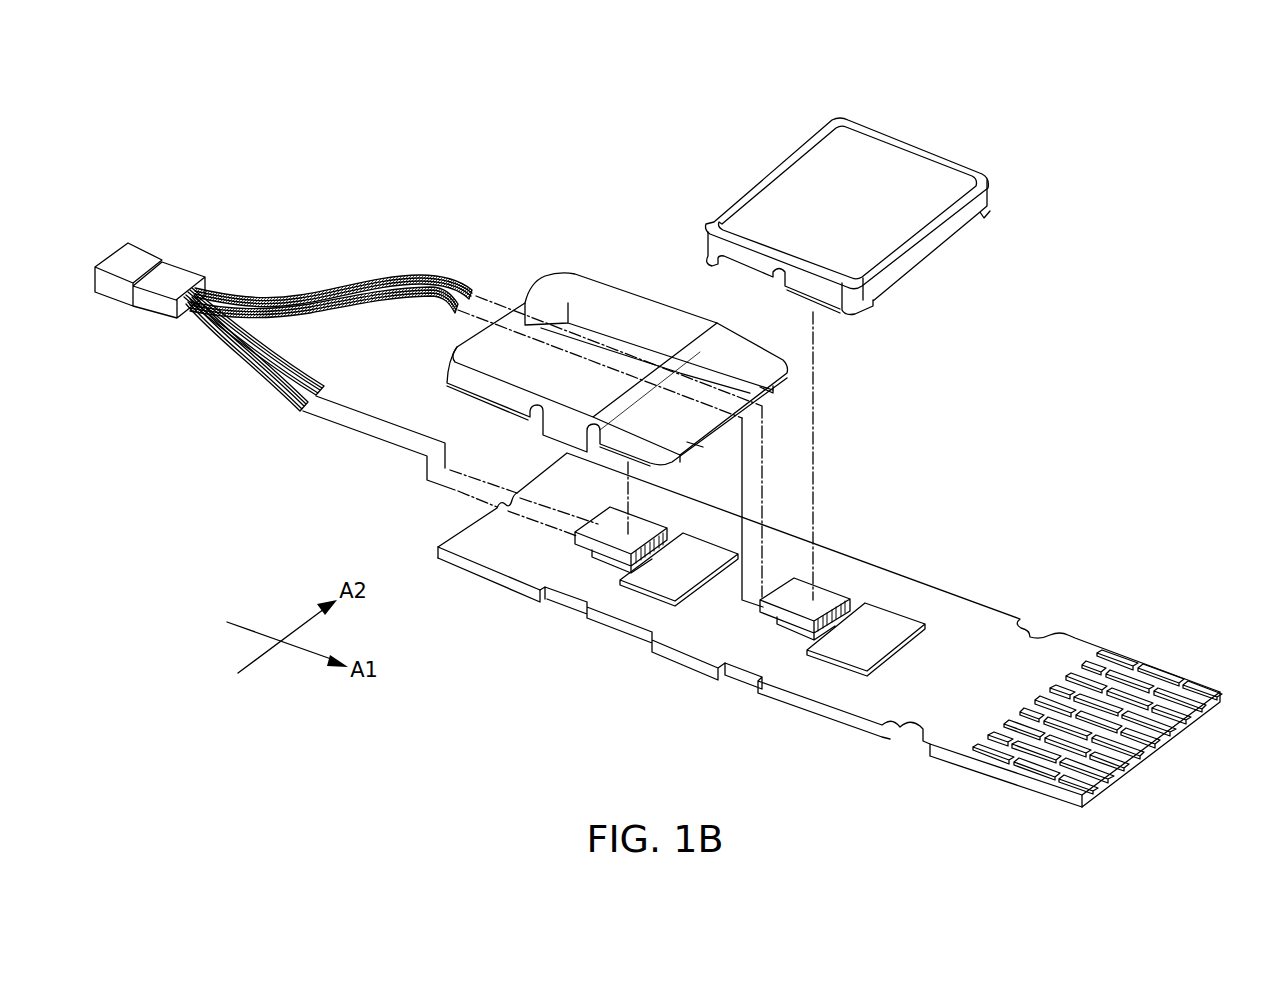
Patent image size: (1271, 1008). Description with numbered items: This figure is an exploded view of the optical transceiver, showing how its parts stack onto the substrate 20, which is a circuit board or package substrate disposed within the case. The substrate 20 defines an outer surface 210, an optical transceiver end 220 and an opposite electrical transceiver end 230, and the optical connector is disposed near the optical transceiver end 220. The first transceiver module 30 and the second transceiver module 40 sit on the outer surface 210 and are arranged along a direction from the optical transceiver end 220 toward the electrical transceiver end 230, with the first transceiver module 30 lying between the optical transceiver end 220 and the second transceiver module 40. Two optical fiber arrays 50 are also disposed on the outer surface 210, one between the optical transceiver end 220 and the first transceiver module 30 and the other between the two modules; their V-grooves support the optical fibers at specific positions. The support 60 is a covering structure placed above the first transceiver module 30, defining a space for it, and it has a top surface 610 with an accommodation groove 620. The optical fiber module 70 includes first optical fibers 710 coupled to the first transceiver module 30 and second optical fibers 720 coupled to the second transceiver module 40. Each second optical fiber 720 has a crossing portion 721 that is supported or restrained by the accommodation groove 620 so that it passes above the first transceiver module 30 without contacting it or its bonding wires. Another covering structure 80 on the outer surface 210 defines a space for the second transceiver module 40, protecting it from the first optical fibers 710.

The substrate 20 is at (762, 551).
The outer surface 210 is at (960, 607).
The optical transceiver end 220 is at (472, 517).
The electrical transceiver end 230 is at (1131, 695).
The first transceiver module 30 is at (697, 563).
The second transceiver module 40 is at (874, 625).
The optical fiber array 50 is at (606, 538).
The support 60 is at (617, 337).
The top surface 610 is at (574, 283).
The accommodation groove 620 is at (612, 346).
The optical fiber module 70 is at (283, 339).
The first optical fibers 710 is at (232, 346).
The second optical fibers 720 is at (331, 324).
The crossing portion 721 is at (390, 272).
The covering structure 80 is at (903, 168).